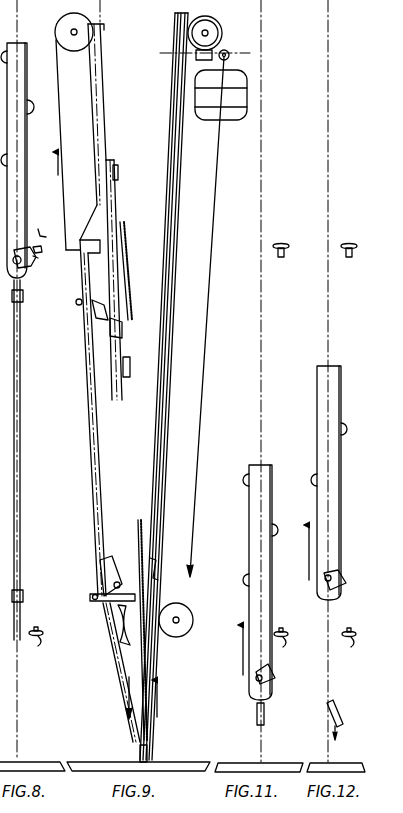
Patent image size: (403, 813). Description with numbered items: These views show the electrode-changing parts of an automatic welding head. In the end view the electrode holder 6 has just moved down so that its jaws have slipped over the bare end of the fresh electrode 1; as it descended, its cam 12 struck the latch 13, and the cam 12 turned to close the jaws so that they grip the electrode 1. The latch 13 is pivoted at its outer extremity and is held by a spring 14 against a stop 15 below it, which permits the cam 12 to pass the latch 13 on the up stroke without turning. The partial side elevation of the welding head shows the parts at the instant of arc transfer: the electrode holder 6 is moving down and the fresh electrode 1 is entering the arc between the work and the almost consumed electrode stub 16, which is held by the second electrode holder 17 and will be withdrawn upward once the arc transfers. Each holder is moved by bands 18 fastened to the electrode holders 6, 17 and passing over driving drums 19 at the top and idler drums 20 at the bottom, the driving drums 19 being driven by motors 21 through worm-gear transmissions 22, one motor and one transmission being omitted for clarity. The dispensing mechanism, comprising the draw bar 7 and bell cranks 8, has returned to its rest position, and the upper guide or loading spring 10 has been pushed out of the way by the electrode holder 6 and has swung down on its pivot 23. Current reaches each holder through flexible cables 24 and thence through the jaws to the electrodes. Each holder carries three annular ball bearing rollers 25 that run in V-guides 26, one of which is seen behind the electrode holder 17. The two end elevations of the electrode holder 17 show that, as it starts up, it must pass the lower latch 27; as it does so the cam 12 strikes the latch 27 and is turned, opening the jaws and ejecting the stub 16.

In FIG. 8, the electrode 1 is at (21, 440).
In FIG. 9, the electrode 1 is at (130, 742).
In FIG. 8, the electrode holder 6 is at (27, 145).
In FIG. 9, the electrode holder 6 is at (118, 205).
In FIG. 9, the draw bar 7 is at (88, 107).
In FIG. 9, the bell cranks 8 is at (112, 330).
In FIG. 8, the guide springs 10 is at (24, 296).
In FIG. 9, the guide springs 10 is at (95, 313).
In FIG. 8, the cam 12 is at (33, 266).
In FIG. 9, the cam 12 is at (130, 365).
In FIG. 11, the cam 12 is at (276, 680).
In FIG. 12, the cam 12 is at (346, 578).
In FIG. 8, the latch 13 is at (42, 248).
In FIG. 11, the latch 13 is at (285, 242).
In FIG. 12, the latch 13 is at (353, 242).
In FIG. 8, the spring 14 is at (48, 231).
In FIG. 8, the stop 15 is at (38, 259).
In FIG. 9, the electrode stub 16 is at (150, 752).
In FIG. 11, the electrode stub 16 is at (265, 712).
In FIG. 12, the electrode stub 16 is at (343, 714).
In FIG. 9, the electrode holder 17 is at (156, 680).
In FIG. 11, the electrode holder 17 is at (253, 522).
In FIG. 12, the electrode holder 17 is at (341, 470).
In FIG. 9, the bands 18 is at (61, 133).
In FIG. 9, the driving drums 19 is at (62, 25).
In FIG. 9, the idler drums 20 is at (120, 634).
In FIG. 9, the motors 21 is at (248, 95).
In FIG. 9, the worm-gear transmissions 22 is at (228, 50).
In FIG. 9, the pivot 23 is at (77, 304).
In FIG. 9, the flexible cables 24 is at (128, 243).
In FIG. 8, the annular ball bearing rollers 25 is at (32, 107).
In FIG. 9, the annular ball bearing rollers 25 is at (120, 172).
In FIG. 9, the V-guides 26 is at (170, 138).
In FIG. 8, the lower latch 27 is at (43, 632).
In FIG. 11, the lower latch 27 is at (288, 633).
In FIG. 12, the lower latch 27 is at (356, 633).